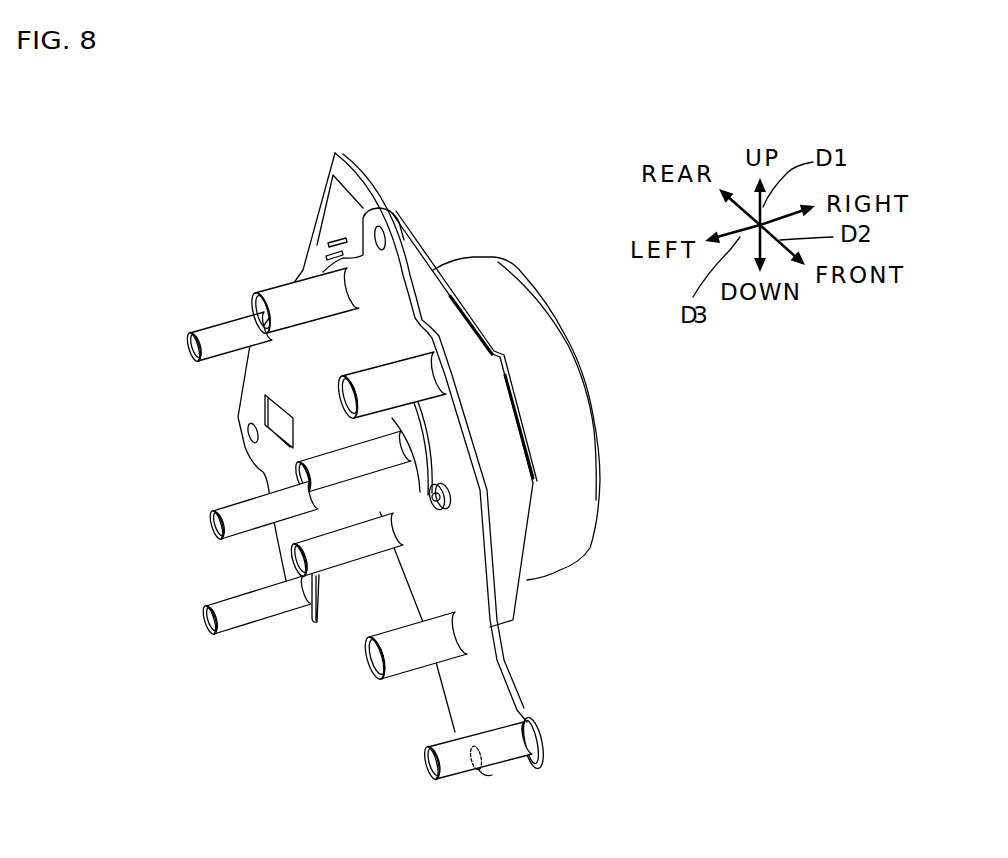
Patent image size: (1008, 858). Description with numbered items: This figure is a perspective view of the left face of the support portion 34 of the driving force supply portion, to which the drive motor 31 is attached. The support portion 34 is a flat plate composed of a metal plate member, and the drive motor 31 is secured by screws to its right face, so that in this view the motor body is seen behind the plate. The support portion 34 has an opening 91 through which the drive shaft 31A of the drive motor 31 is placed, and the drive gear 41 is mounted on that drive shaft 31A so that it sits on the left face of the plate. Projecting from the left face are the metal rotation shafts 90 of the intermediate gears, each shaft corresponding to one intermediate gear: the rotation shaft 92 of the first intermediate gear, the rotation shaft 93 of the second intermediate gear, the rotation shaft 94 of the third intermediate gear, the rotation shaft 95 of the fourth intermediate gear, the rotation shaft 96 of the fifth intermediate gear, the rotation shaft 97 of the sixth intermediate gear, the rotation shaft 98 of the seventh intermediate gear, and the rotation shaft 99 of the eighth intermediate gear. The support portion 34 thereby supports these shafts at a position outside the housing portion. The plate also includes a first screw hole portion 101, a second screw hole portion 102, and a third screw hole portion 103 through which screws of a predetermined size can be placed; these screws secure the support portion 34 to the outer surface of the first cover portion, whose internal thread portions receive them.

The drive motor 31 is at (505, 242).
The support portion 34 is at (543, 689).
The drive shaft 31A is at (362, 460).
The drive gear 41 is at (327, 472).
The rotation shafts 90 is at (300, 535).
The opening 91 is at (415, 499).
The rotation shaft of the first intermediate gear 92 is at (345, 396).
The rotation shaft of the second intermediate gear 93 is at (262, 318).
The rotation shaft of the third intermediate gear 94 is at (193, 347).
The rotation shaft of the fourth intermediate gear 95 is at (297, 562).
The rotation shaft of the fifth intermediate gear 96 is at (216, 525).
The rotation shaft of the sixth intermediate gear 97 is at (209, 621).
The rotation shaft of the seventh intermediate gear 98 is at (373, 660).
The rotation shaft of the eighth intermediate gear 99 is at (430, 764).
The first screw hole portion 101 is at (470, 746).
The second screw hole portion 102 is at (375, 236).
The third screw hole portion 103 is at (249, 434).